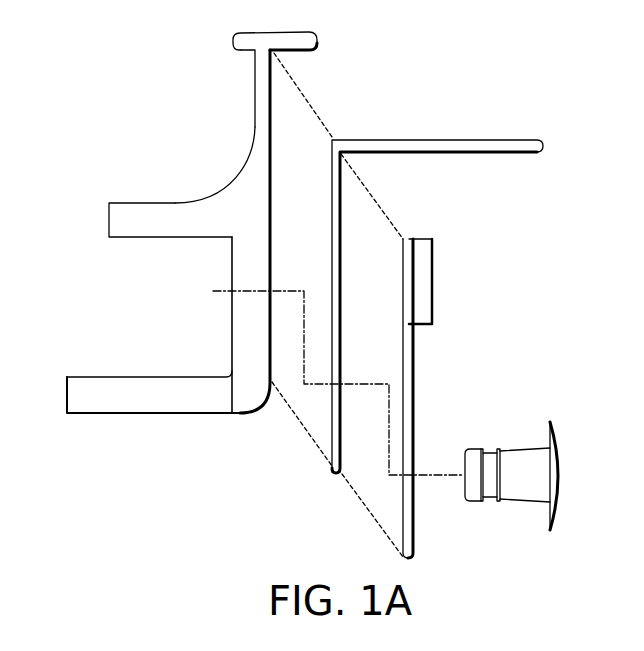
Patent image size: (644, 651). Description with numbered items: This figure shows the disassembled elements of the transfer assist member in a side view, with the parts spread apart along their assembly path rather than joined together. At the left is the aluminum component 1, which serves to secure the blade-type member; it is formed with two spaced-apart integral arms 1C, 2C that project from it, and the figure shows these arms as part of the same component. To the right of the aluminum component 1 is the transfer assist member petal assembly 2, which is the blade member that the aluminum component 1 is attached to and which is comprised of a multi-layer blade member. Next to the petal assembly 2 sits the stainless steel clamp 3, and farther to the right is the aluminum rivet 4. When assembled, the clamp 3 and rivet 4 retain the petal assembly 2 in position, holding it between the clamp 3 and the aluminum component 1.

The aluminum component 1 is at (247, 177).
The integral arm 1C is at (123, 221).
The transfer assist member petal assembly 2 is at (483, 140).
The integral arm 2C is at (76, 397).
The stainless steel clamp 3 is at (422, 292).
The aluminum rivet 4 is at (556, 488).